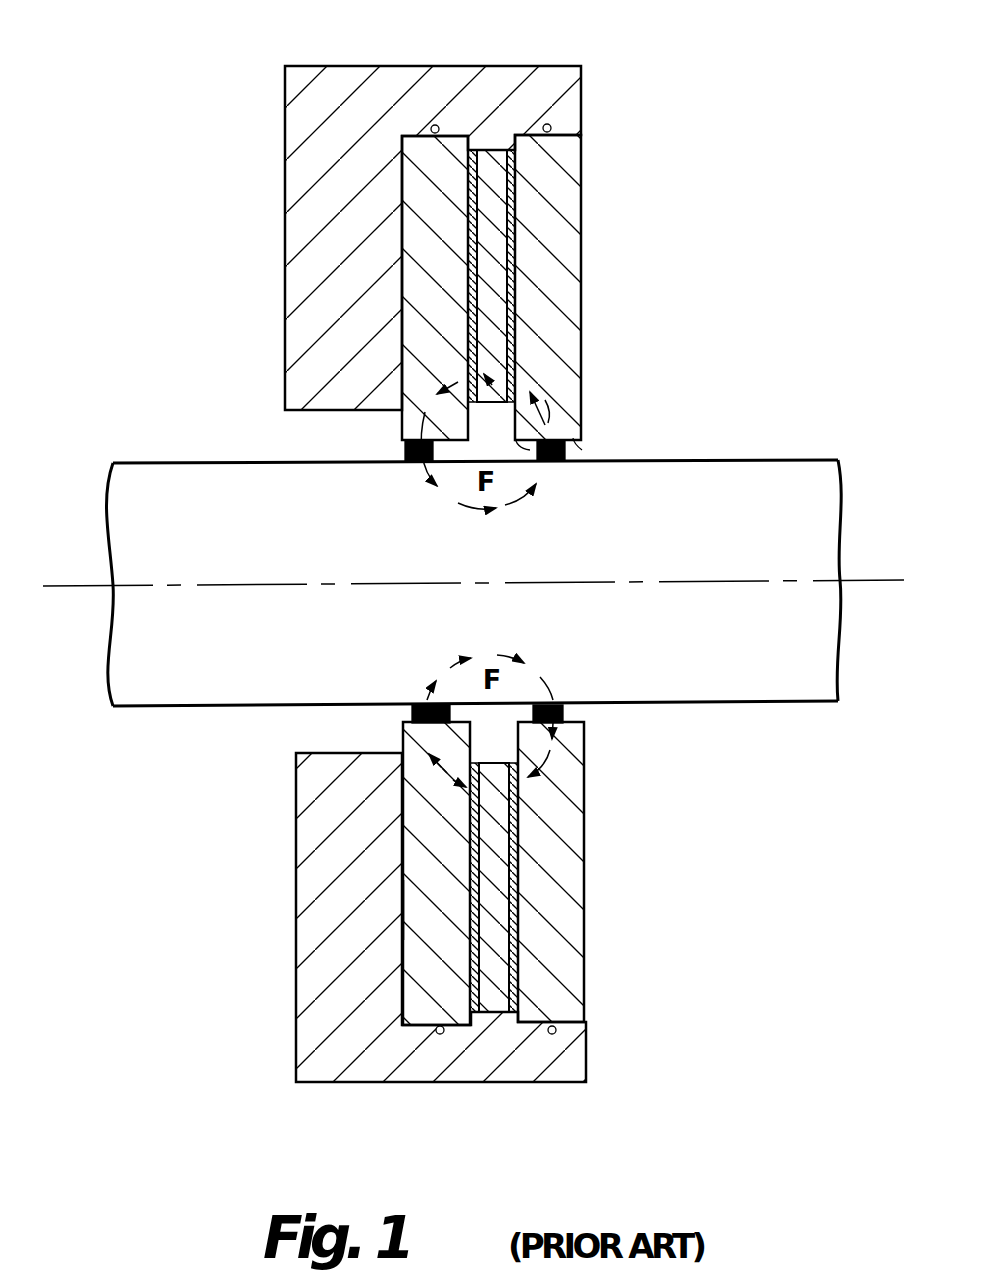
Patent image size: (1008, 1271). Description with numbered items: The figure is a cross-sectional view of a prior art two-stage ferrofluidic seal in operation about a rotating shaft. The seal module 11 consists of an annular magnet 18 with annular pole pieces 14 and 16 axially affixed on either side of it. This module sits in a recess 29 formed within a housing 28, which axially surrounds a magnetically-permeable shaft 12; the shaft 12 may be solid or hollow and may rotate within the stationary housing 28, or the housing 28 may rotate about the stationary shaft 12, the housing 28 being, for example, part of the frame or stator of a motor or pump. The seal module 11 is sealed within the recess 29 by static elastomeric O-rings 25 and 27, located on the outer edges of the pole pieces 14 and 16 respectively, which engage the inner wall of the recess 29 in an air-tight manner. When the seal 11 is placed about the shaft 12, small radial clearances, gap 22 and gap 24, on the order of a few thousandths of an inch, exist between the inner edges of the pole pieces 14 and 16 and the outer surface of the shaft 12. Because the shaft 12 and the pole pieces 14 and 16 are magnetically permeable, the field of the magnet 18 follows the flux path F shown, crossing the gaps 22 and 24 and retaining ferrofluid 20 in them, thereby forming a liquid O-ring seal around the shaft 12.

The seal module 11 is at (547, 580).
The shaft 12 is at (753, 458).
The pole piece 14 is at (530, 262).
The pole piece 16 is at (419, 265).
The annular magnet 18 is at (507, 310).
The ferrofluid 20 is at (435, 452).
The gap 22 is at (587, 446).
The gap 24 is at (403, 447).
The O-ring 25 is at (550, 125).
The O-ring 27 is at (435, 124).
The housing 28 is at (566, 99).
The recess 29 is at (402, 910).